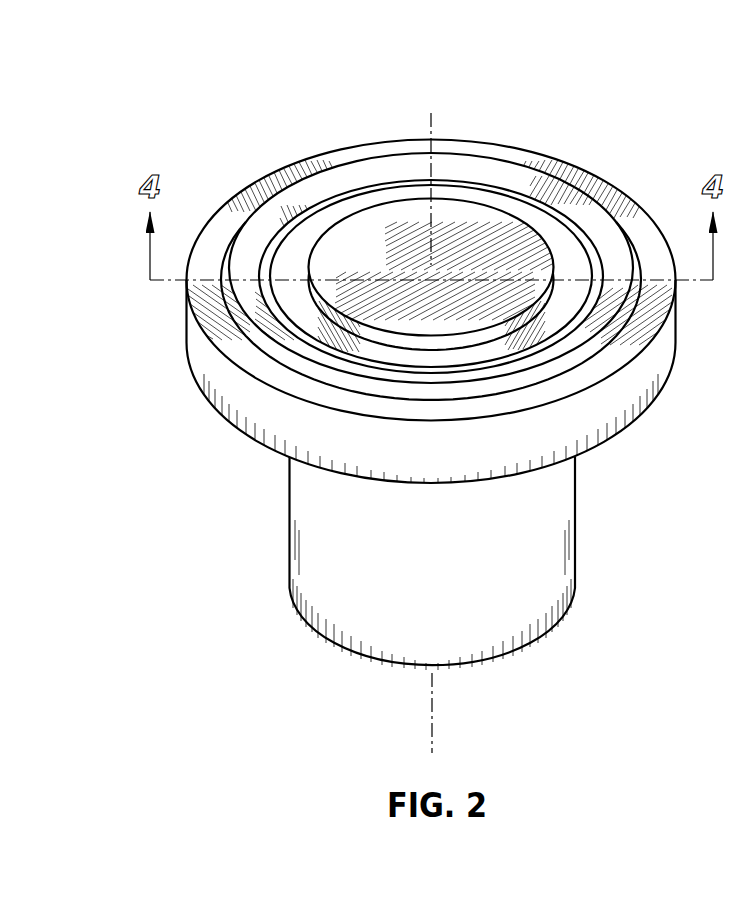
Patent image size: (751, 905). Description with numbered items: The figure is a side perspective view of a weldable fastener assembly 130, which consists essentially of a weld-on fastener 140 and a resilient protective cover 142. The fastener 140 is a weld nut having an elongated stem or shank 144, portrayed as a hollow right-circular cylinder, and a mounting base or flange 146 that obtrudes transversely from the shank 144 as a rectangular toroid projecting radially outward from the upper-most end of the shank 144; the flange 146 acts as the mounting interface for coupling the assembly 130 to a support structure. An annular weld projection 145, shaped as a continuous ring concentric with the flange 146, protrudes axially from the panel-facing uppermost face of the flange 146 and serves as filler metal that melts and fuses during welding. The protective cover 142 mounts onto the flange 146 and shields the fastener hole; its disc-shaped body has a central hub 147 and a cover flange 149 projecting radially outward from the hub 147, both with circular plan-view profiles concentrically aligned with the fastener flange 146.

The weldable fastener assembly 130 is at (280, 117).
The weld-on fastener 140 is at (242, 503).
The protective cover 142 is at (512, 200).
The shank 144 is at (298, 548).
The weld projection 145 is at (343, 178).
The flange 146 is at (190, 341).
The central hub 147 is at (465, 212).
The cover flange 149 is at (407, 190).